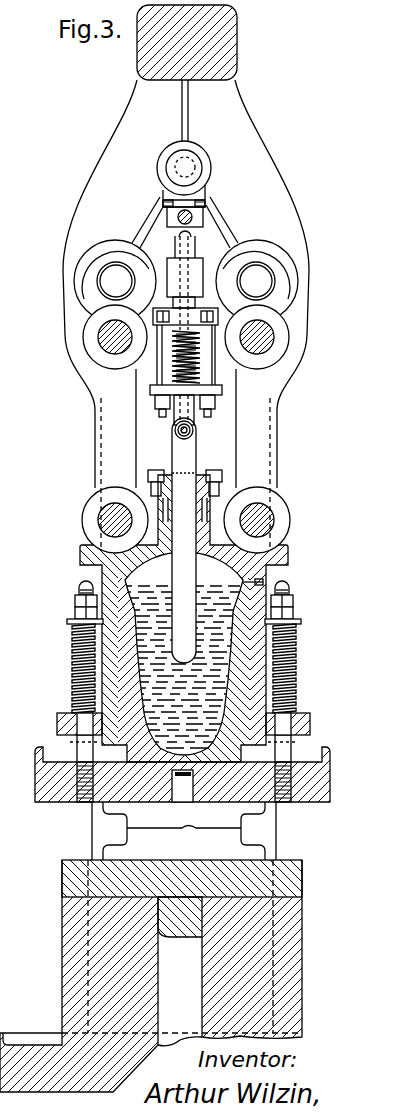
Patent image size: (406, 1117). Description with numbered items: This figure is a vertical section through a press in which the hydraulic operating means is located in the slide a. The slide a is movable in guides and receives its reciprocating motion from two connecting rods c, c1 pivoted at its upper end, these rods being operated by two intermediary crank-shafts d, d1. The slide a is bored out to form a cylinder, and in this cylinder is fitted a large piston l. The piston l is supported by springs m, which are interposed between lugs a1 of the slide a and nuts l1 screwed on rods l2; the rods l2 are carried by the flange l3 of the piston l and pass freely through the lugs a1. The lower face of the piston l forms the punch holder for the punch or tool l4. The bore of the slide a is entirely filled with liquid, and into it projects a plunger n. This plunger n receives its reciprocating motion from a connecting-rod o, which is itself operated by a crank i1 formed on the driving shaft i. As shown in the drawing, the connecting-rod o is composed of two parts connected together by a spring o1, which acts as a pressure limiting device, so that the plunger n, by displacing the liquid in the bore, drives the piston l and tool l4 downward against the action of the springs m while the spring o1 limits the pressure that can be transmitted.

The driving shaft i is at (170, 165).
The crank i1 is at (190, 183).
The intermediary crank-shaft d is at (110, 282).
The intermediary crank-shaft d1 is at (262, 282).
The connecting rod c is at (115, 461).
The connecting rod c1 is at (257, 461).
The connecting-rod o is at (175, 430).
The spring o1 is at (200, 378).
The plunger n is at (185, 653).
The piston l is at (196, 637).
The nut l1 is at (310, 605).
The rod l2 is at (316, 580).
The flange l3 is at (336, 772).
The punch or tool l4 is at (184, 830).
The slide a is at (96, 565).
The lug a1 is at (316, 725).
The spring m is at (72, 668).